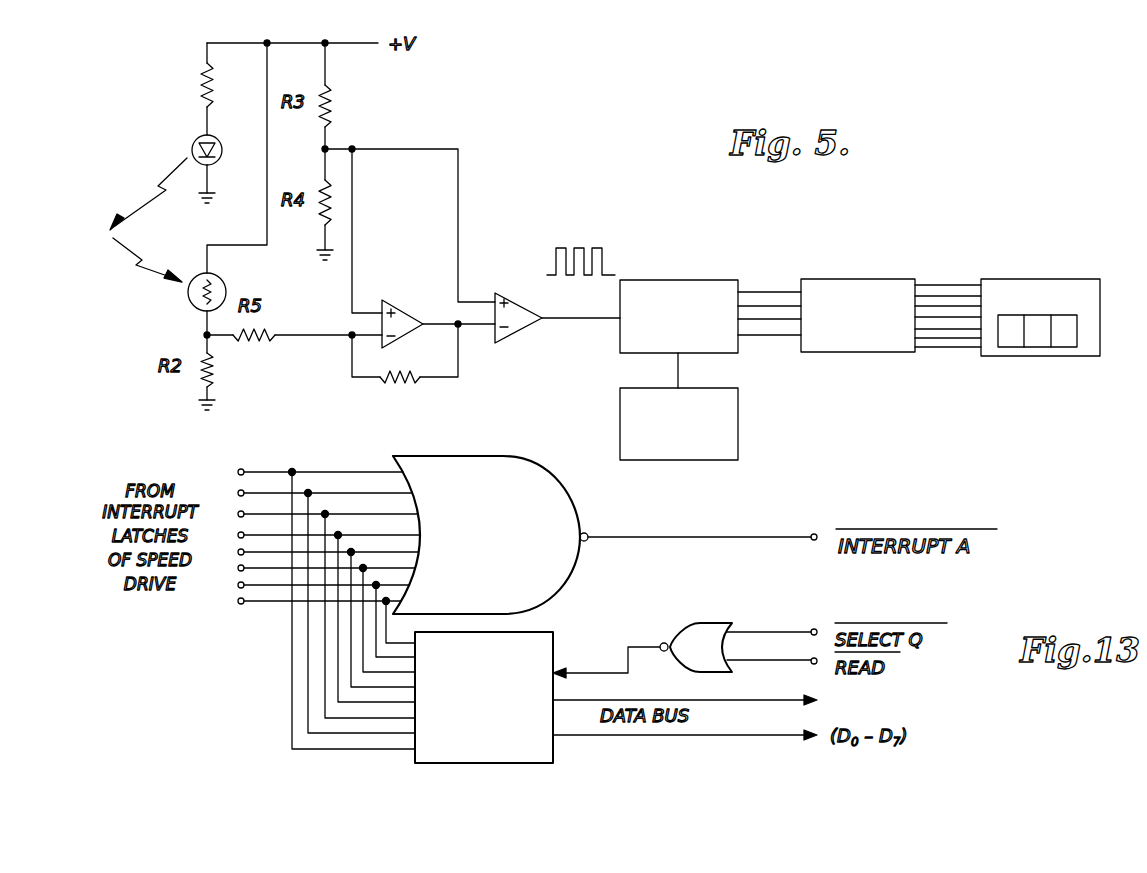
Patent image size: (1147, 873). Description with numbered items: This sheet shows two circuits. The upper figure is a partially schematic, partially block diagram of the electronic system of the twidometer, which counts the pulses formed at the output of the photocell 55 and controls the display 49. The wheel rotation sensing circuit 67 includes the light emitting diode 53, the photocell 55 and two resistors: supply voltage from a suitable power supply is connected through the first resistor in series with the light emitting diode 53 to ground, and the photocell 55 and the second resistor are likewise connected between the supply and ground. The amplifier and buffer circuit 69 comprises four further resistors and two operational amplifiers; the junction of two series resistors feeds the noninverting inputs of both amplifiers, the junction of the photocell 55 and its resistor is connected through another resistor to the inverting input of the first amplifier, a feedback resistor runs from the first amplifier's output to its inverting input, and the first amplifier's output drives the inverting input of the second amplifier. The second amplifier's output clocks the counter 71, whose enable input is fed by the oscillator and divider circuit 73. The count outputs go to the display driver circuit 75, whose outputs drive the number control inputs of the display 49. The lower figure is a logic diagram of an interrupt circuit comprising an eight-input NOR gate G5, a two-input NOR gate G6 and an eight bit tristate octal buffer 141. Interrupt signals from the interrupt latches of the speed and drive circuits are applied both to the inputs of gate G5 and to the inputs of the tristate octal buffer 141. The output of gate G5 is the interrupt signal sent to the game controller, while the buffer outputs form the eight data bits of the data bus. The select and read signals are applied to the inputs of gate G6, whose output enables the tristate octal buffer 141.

In FIG. 5, the display 49 is at (1018, 279).
In FIG. 5, the LED 53 is at (192, 143).
In FIG. 5, the PC 55 is at (189, 306).
In FIG. 5, the wheel rotation sensing circuit 67 is at (194, 123).
In FIG. 5, the amplifier and buffer circuit 69 is at (408, 205).
In FIG. 5, the counter 71 is at (660, 280).
In FIG. 5, the oscillator and divider circuit 73 is at (738, 420).
In FIG. 5, the display driver circuit 75 is at (830, 279).
In FIG. 13, the tristate octal buffer 141 is at (553, 633).
In FIG. 13, the eight-input NOR gate G5 is at (574, 510).
In FIG. 13, the two-input NOR gate G6 is at (718, 623).